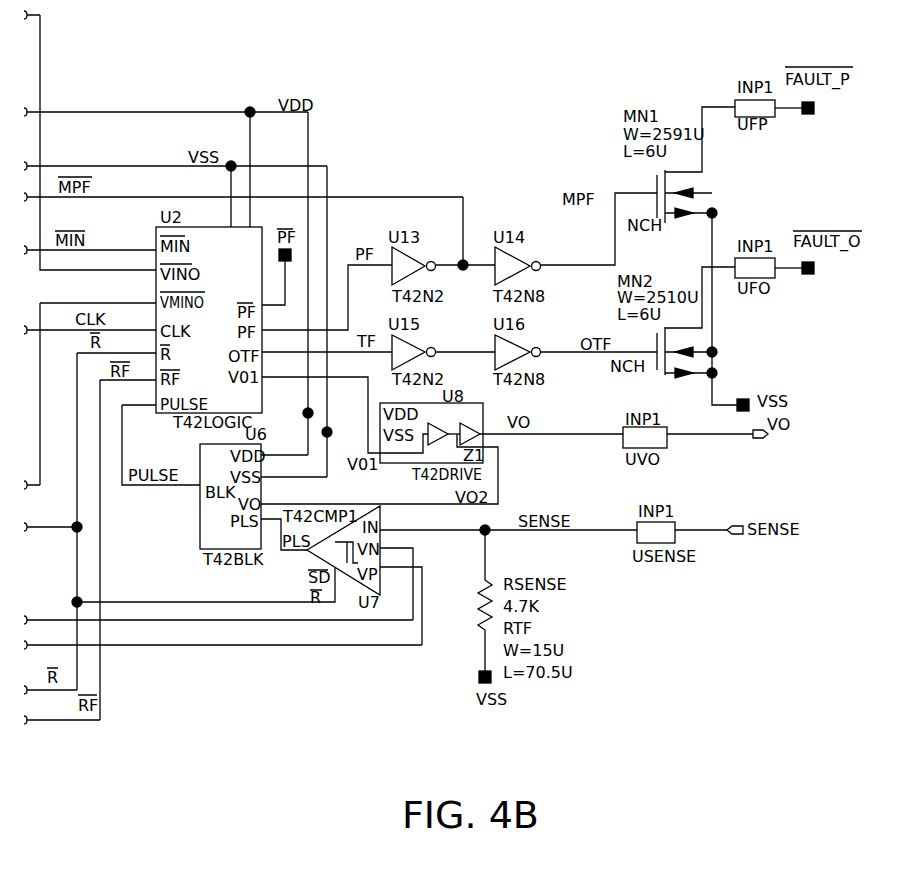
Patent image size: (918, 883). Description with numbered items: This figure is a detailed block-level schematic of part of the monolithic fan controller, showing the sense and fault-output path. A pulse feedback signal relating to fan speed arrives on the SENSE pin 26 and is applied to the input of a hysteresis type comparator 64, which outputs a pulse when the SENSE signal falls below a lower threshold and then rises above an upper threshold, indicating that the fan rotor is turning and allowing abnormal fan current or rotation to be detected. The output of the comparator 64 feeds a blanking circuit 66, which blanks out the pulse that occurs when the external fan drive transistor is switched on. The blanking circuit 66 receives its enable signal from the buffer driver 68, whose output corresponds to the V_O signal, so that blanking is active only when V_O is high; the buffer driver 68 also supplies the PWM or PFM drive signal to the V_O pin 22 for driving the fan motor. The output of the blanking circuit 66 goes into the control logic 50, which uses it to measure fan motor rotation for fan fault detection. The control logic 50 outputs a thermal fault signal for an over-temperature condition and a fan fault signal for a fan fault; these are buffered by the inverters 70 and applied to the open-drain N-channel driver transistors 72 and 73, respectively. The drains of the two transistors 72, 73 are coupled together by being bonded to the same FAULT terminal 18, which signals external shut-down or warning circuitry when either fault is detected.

The control logic 50 is at (197, 227).
The inverters 70 is at (535, 212).
The N-channel driver transistor 73 is at (712, 193).
The N-channel driver transistor 72 is at (725, 360).
The FAULT terminal 18 is at (777, 118).
The buffer driver 68 is at (483, 405).
The V_O pin 22 is at (768, 438).
The SENSE pin 26 is at (743, 535).
The blanking circuit 66 is at (200, 518).
The hysteresis type comparator 64 is at (312, 562).